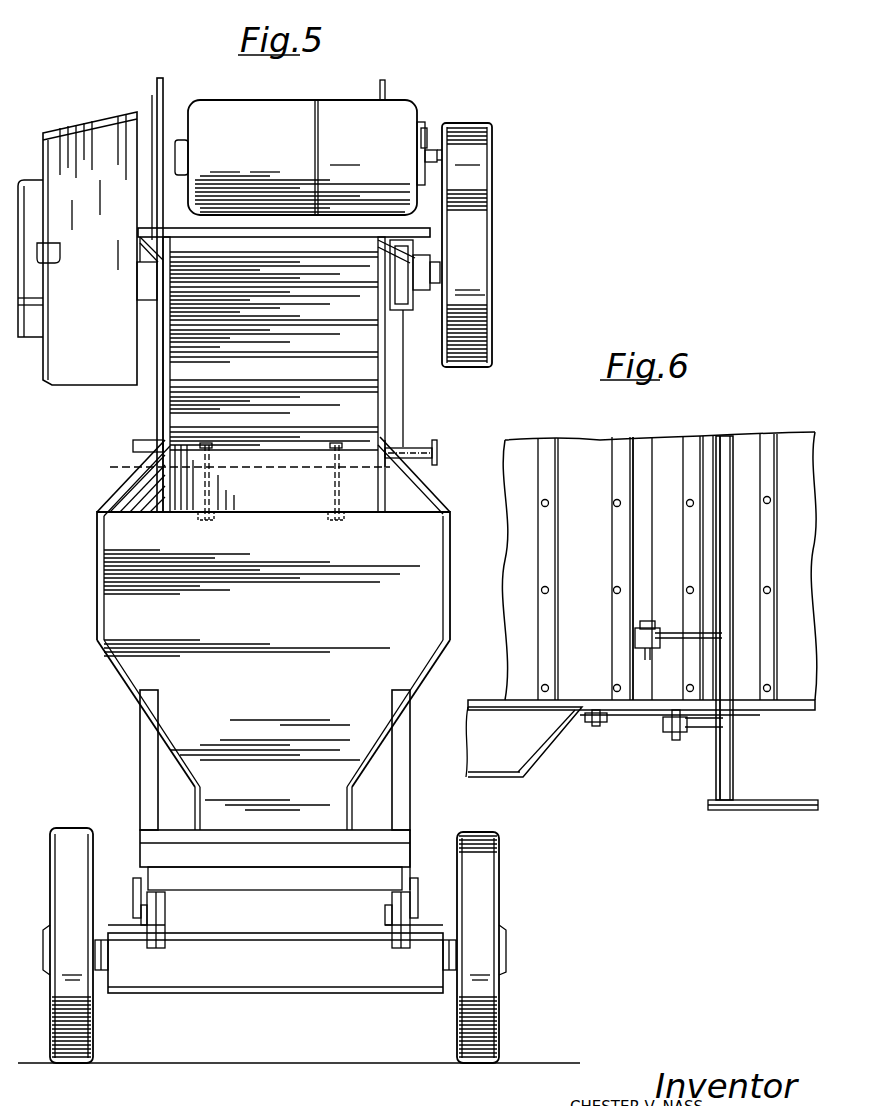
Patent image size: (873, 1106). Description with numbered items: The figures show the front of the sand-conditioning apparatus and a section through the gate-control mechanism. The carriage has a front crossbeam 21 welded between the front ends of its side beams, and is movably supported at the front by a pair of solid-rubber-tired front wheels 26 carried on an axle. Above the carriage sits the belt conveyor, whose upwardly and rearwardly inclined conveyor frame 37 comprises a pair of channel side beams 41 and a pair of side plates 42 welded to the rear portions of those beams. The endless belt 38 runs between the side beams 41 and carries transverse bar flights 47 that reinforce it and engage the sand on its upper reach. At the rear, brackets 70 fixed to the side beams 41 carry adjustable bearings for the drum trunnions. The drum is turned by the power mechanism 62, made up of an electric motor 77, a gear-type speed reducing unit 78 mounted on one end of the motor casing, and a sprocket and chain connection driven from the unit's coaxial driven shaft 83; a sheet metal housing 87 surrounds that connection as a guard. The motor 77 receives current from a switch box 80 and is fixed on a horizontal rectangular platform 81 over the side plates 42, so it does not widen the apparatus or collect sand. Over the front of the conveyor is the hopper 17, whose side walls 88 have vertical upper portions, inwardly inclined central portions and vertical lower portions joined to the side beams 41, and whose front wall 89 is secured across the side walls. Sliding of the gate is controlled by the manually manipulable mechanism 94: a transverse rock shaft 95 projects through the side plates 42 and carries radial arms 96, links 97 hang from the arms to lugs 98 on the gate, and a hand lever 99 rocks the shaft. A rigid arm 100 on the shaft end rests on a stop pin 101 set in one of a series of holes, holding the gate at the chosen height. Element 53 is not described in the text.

In FIG. 5, the hopper 17 is at (113, 489).
In FIG. 5, the front crossbeam 21 is at (303, 986).
In FIG. 5, the front wheels 26 is at (57, 873).
In FIG. 5, the conveyor frame 37 is at (136, 769).
In FIG. 5, the endless belt 38 is at (274, 374).
In FIG. 6, the endless belt 38 is at (659, 566).
In FIG. 5, the side beams 41 is at (140, 800).
In FIG. 5, the side plates 42 is at (165, 90).
In FIG. 6, the side plates 42 is at (758, 712).
In FIG. 5, the flights 47 is at (298, 356).
In FIG. 6, the flights 47 is at (548, 684).
In FIG. 5, the bearing block 53 is at (136, 920).
In FIG. 5, the power mechanism 62 is at (425, 100).
In FIG. 5, the brackets 70 is at (157, 290).
In FIG. 5, the electric motor 77 is at (250, 107).
In FIG. 5, the speed reducing unit 78 is at (345, 105).
In FIG. 5, the switch box 80 is at (77, 248).
In FIG. 5, the platform 81 is at (277, 235).
In FIG. 5, the driven shaft 83 is at (433, 143).
In FIG. 5, the housing 87 is at (490, 223).
In FIG. 5, the side walls 88 is at (97, 594).
In FIG. 6, the side walls 88 is at (512, 780).
In FIG. 5, the front wall 89 is at (273, 661).
In FIG. 6, the manually manipulable mechanism 94 is at (705, 755).
In FIG. 5, the rock shaft 95 is at (413, 447).
In FIG. 6, the rock shaft 95 is at (733, 774).
In FIG. 6, the arms 96 is at (672, 645).
In FIG. 6, the links 97 is at (643, 628).
In FIG. 6, the lugs 98 is at (653, 615).
In FIG. 5, the hand lever 99 is at (437, 446).
In FIG. 6, the hand lever 99 is at (753, 812).
In FIG. 6, the rigid arm 100 is at (700, 728).
In FIG. 6, the stop pin 101 is at (672, 722).